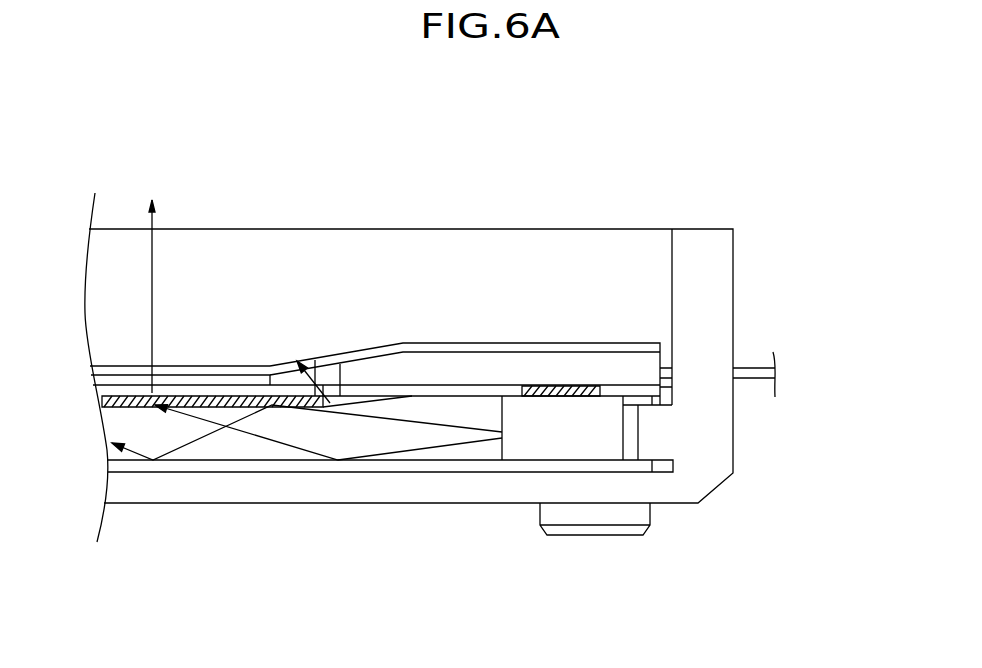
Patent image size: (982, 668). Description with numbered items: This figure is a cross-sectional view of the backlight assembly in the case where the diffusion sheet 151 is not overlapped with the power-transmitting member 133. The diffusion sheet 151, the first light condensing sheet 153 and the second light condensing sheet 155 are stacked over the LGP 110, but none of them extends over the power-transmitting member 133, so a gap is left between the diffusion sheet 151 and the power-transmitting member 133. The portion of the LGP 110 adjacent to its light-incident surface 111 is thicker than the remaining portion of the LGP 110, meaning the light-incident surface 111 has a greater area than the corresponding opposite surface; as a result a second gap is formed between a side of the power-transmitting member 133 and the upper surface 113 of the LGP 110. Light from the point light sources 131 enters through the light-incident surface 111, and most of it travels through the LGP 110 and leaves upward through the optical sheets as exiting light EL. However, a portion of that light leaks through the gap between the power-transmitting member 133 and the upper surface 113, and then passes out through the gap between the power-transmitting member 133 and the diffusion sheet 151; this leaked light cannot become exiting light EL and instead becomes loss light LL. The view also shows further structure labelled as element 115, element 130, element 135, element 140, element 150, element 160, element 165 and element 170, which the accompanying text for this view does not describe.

The LGP 110 is at (370, 509).
The light-incident surface 111 is at (502, 440).
The upper surface 113 is at (425, 398).
The reflective sheet 115 is at (366, 463).
The display panel 130 is at (486, 335).
The point light sources 131 is at (597, 405).
The power-transmitting member 133 is at (592, 363).
The flexible printed circuit board 135 is at (780, 364).
The adhesive member 140 is at (647, 390).
The optical member 150 is at (215, 258).
The diffusion sheet 151 is at (290, 395).
The first light condensing sheet 153 is at (254, 383).
The second light condensing sheet 155 is at (188, 380).
The housing 160 is at (715, 448).
The bottom chassis 165 is at (275, 468).
The window 170 is at (570, 343).
The loss light LL is at (314, 358).
The exiting light EL is at (152, 311).